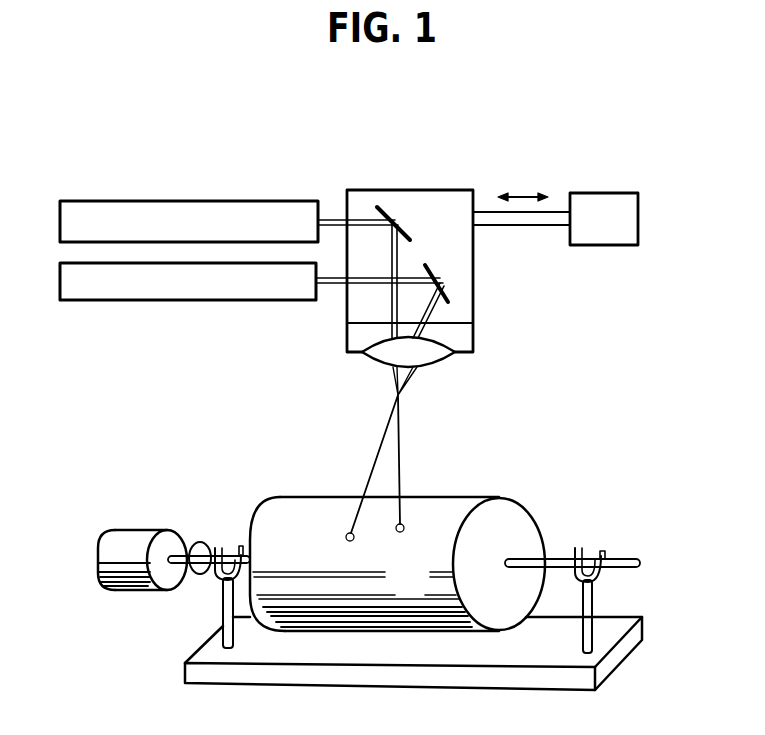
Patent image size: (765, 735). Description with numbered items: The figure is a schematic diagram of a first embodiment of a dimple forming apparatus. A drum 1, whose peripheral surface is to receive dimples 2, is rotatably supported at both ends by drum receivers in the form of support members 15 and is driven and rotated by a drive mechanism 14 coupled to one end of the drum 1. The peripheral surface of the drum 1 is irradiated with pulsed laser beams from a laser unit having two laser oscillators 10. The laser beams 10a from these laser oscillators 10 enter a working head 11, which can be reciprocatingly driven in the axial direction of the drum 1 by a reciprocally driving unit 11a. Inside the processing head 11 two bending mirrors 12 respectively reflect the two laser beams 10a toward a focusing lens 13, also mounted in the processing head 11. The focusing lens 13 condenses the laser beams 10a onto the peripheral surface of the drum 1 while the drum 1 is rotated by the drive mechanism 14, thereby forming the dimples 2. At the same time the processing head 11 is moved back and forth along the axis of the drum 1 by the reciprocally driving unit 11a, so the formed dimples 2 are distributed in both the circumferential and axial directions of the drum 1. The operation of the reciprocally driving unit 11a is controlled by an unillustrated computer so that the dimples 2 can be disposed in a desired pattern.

The drum 1 is at (525, 542).
The dimples 2 is at (400, 532).
The laser oscillators 10 is at (160, 216).
The laser beams 10a is at (328, 221).
The working head 11 is at (430, 190).
The reciprocally driving unit 11a is at (603, 193).
The bending mirrors 12 is at (412, 225).
The focusing lens 13 is at (430, 357).
The drive mechanism 14 is at (133, 548).
The support members 15 is at (590, 607).